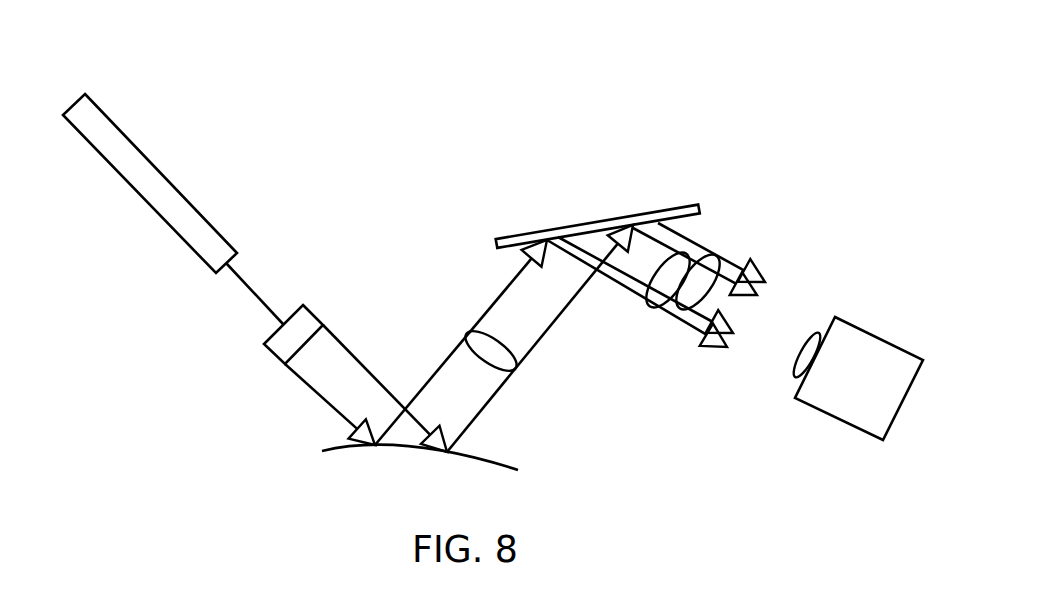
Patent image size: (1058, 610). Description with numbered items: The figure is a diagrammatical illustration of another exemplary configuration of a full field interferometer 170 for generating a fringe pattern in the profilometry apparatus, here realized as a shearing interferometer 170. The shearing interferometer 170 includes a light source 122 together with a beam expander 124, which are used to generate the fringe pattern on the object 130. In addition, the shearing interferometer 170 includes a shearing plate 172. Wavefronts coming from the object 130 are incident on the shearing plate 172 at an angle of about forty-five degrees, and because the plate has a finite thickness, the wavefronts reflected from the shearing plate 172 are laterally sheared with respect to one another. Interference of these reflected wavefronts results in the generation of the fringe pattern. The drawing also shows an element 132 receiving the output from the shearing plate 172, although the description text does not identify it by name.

The shearing interferometer 170 is at (783, 103).
The light source 122 is at (162, 165).
The beam expander 124 is at (312, 310).
The object 130 is at (488, 462).
The shearing plate 172 is at (596, 221).
The detector 132 is at (878, 338).